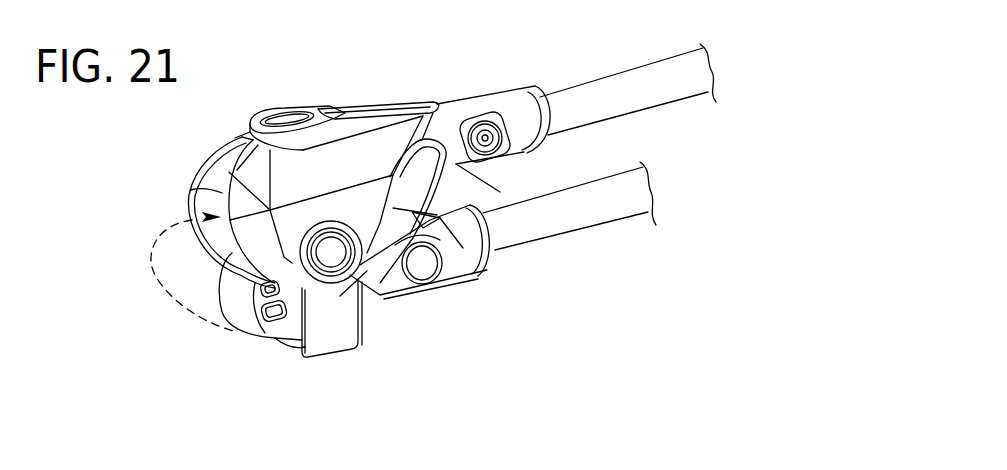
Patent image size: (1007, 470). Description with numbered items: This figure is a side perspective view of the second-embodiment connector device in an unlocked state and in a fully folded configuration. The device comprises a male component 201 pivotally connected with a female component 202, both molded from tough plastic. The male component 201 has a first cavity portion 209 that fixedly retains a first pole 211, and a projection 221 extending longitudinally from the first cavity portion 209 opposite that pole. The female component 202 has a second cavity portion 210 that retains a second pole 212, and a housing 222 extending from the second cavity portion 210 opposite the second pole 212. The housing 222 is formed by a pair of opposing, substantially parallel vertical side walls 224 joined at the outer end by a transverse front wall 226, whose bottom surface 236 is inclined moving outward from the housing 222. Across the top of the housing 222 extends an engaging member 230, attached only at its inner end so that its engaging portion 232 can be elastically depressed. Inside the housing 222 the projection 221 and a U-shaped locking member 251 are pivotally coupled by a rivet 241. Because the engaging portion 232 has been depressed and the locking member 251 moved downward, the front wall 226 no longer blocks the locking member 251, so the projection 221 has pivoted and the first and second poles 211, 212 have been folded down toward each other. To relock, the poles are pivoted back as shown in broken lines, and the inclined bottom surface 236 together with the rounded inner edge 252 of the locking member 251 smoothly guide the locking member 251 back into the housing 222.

The male component 201 is at (222, 350).
The female component 202 is at (160, 214).
The first cavity portion 209 is at (477, 246).
The second cavity portion 210 is at (515, 112).
The first pole 211 is at (592, 222).
The second pole 212 is at (615, 92).
The projection 221 is at (288, 333).
The housing 222 is at (380, 202).
The side walls 224 is at (372, 150).
The front wall 226 is at (205, 176).
The engaging member 230 is at (330, 115).
The engaging portion 232 is at (282, 117).
The bottom surface 236 is at (208, 198).
The rivet 241 is at (332, 253).
The locking member 251 is at (345, 351).
The inner edge 252 is at (296, 352).